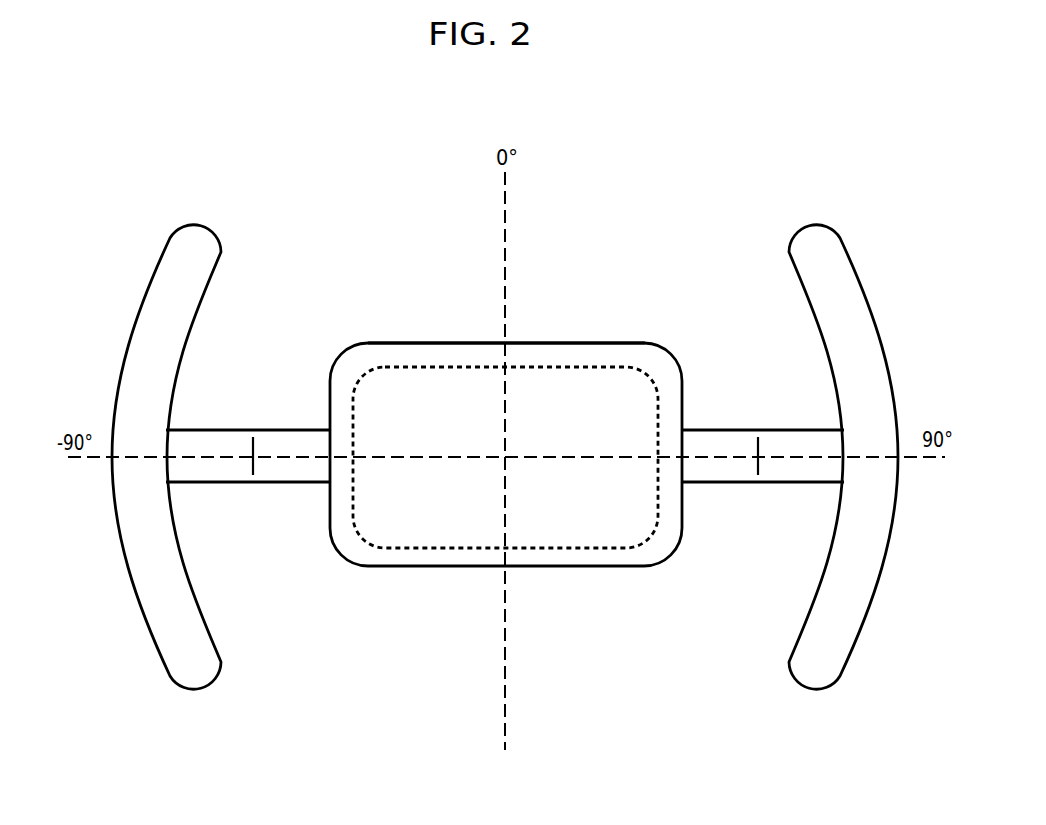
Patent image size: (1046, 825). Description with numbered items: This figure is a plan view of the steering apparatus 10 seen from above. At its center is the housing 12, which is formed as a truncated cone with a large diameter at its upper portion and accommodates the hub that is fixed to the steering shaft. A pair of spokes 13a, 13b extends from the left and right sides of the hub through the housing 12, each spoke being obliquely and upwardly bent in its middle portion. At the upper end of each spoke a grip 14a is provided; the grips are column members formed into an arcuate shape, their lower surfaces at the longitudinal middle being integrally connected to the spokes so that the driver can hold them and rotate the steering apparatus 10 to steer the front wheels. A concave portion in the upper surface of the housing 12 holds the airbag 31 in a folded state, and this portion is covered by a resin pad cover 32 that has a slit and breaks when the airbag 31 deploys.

The steering apparatus 10 is at (562, 612).
The housing 12 is at (437, 567).
The spoke 13a is at (222, 484).
The spoke 13b is at (782, 484).
The grip 14a is at (178, 360).
The airbag 31 is at (563, 367).
The pad cover 32 is at (472, 355).